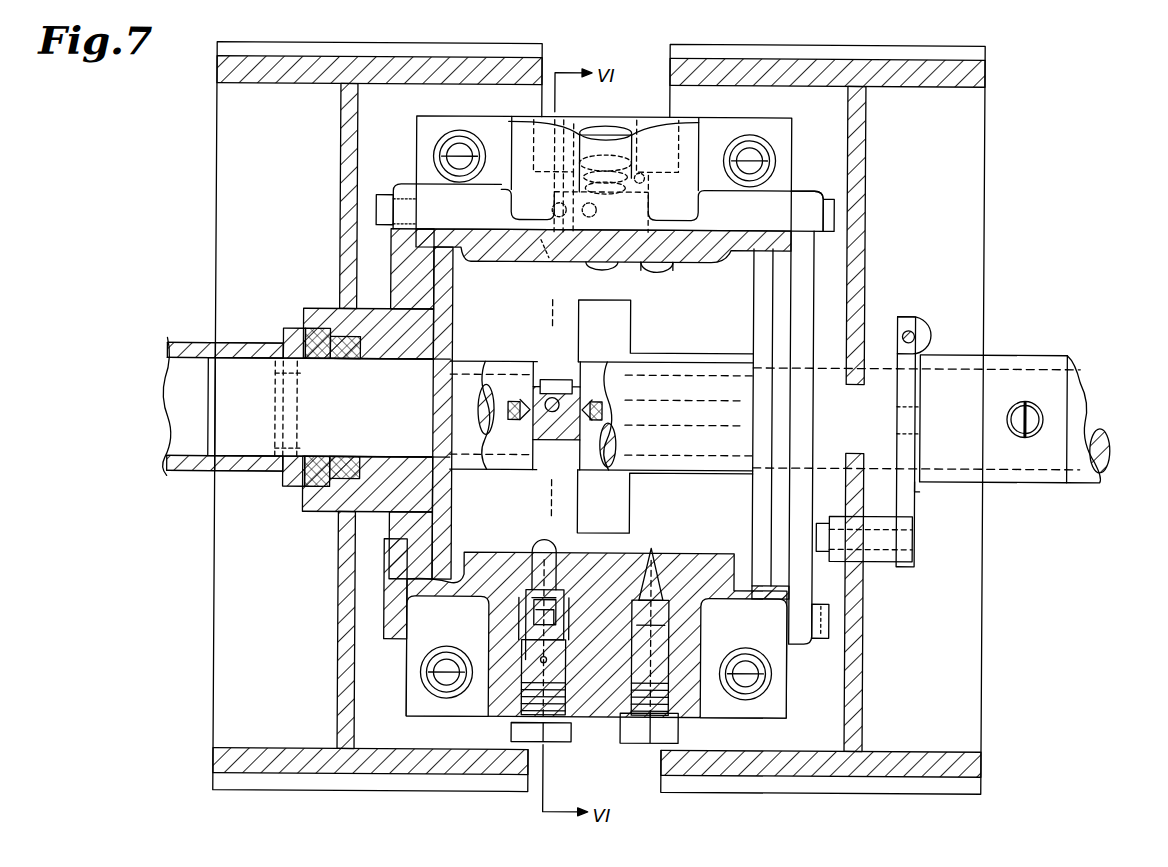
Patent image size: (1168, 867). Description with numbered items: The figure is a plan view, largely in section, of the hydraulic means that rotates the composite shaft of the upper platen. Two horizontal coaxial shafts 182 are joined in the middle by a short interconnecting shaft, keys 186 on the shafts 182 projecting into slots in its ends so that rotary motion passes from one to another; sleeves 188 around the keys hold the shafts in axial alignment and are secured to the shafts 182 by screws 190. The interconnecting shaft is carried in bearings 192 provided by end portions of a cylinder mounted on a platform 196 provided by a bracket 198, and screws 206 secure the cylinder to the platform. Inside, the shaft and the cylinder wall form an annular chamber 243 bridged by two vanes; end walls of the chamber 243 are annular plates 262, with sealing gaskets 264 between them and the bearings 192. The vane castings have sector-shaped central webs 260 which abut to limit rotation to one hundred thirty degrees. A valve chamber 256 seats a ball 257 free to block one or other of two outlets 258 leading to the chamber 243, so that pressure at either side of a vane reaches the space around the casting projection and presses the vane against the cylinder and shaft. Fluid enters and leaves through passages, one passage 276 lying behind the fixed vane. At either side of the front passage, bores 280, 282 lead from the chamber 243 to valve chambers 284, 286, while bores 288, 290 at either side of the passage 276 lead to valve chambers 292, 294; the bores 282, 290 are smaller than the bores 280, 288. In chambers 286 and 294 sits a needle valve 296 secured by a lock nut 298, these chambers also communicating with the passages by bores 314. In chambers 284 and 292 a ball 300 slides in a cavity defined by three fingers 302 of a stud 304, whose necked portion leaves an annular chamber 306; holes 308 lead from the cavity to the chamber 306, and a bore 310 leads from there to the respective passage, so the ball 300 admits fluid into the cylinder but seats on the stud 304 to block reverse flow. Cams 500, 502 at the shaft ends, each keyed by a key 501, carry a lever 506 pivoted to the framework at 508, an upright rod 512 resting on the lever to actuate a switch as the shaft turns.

The shaft 182 is at (1083, 470).
The key 186 is at (232, 440).
The sleeve 188 is at (243, 345).
The screw 190 is at (1010, 422).
The bearing 192 is at (322, 310).
The platform 196 is at (215, 645).
The bracket 198 is at (856, 224).
The screw 206 is at (440, 157).
The annular chamber 243 is at (598, 417).
The valve chamber 256 is at (536, 427).
The ball 257 is at (572, 390).
The outlet 258 is at (552, 395).
The sector-shaped central web 260 is at (618, 326).
The annular plate 262 is at (452, 331).
The sealing gasket 264 is at (445, 255).
The passage 276 is at (648, 272).
The bore 280 is at (556, 545).
The bore 282 is at (652, 552).
The valve chamber 284 is at (522, 560).
The valve chamber 286 is at (666, 608).
The bore 288 is at (657, 275).
The bore 290 is at (601, 270).
The valve chamber 292 is at (720, 208).
The valve chamber 294 is at (545, 196).
The needle valve 296 is at (658, 655).
The lock nut 298 is at (632, 728).
The ball 300 is at (535, 605).
The finger 302 is at (530, 620).
The stud 304 is at (563, 740).
The annular chamber 306 is at (525, 657).
The hole 308 is at (550, 660).
The bore 310 is at (660, 210).
The bore 314 is at (550, 262).
The cam 500 is at (295, 492).
The key 501 is at (290, 417).
The cam 502 is at (916, 492).
The lever 506 is at (912, 385).
The pivot 508 is at (880, 545).
The upright rod 512 is at (914, 330).